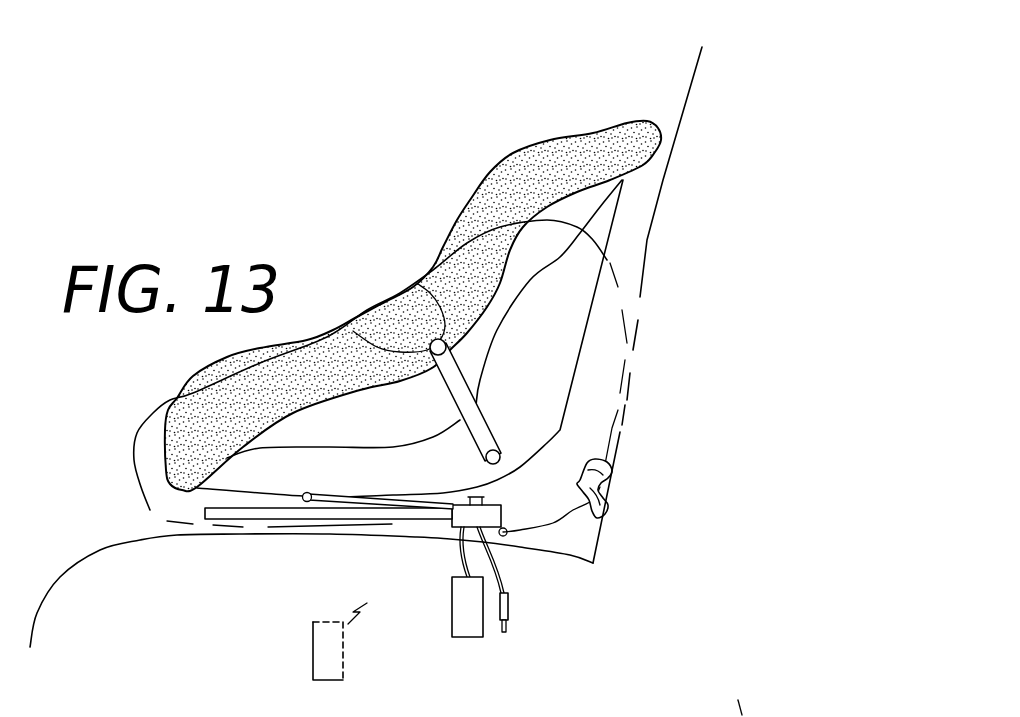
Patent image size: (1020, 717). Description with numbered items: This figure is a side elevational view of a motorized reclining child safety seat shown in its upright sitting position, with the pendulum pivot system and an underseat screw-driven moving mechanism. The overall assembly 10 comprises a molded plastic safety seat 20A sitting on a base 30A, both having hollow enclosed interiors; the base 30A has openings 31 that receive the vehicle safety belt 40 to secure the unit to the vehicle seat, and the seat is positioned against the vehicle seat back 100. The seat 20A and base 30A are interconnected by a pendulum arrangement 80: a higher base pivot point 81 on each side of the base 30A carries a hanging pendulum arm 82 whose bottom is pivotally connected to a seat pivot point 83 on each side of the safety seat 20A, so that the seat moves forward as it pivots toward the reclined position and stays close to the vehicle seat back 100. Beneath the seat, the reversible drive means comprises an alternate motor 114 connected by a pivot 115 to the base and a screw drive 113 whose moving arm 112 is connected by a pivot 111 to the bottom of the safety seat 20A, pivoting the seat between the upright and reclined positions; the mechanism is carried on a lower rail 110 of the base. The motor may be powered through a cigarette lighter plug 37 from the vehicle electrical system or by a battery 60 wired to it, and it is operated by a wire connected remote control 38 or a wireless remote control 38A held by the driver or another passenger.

The seat 10 is at (662, 124).
The safety seat 20A is at (533, 147).
The base 30A is at (143, 497).
The openings 31 is at (597, 460).
The cigarette lighter plug 37 is at (509, 607).
The wire connected remote control 38 is at (452, 638).
The wireless remote control 38A is at (313, 663).
The vehicle safety belt 40 is at (600, 513).
The battery 60 is at (489, 503).
The lumbar support mechanism 80 is at (446, 334).
The base pivot point 81 is at (353, 330).
The pendulum arm 82 is at (470, 380).
The seat pivot point 83 is at (530, 448).
The vehicle seat back 100 is at (687, 72).
The lower rail 110 is at (257, 523).
The pivot 111 is at (307, 491).
The moving arm 112 is at (342, 470).
The screw drive 113 is at (393, 522).
The alternate motor 114 is at (463, 540).
The pivot 115 is at (533, 513).